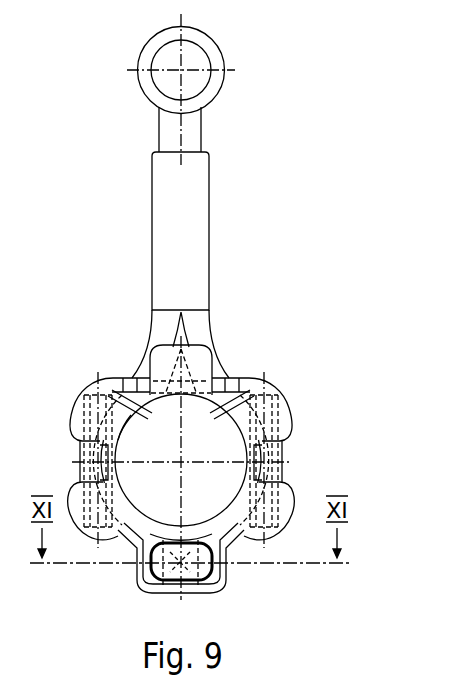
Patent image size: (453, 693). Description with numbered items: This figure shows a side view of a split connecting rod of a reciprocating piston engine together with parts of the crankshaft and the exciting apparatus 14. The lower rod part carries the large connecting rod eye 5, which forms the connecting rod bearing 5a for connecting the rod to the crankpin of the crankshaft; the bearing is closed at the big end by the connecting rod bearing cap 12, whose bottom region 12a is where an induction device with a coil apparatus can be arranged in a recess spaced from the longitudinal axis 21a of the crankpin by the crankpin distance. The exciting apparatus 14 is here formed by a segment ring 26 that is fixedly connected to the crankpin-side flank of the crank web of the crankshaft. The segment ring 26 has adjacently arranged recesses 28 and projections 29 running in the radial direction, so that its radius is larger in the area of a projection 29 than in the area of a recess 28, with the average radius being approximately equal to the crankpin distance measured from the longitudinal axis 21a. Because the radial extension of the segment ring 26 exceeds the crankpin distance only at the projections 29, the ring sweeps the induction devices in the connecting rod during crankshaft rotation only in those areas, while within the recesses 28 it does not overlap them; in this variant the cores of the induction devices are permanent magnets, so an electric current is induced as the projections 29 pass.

The large connecting rod eye 5 is at (162, 425).
The connecting rod bearing 5a is at (130, 452).
The longitudinal axis of the crankpin 21a is at (187, 460).
The axial projection 29 is at (73, 410).
The axial recess 28 is at (77, 453).
The segment ring 26 is at (292, 427).
The exciting apparatus 14 is at (287, 404).
The connecting rod bearing cap 12 is at (233, 547).
The bottom region 12a is at (228, 563).